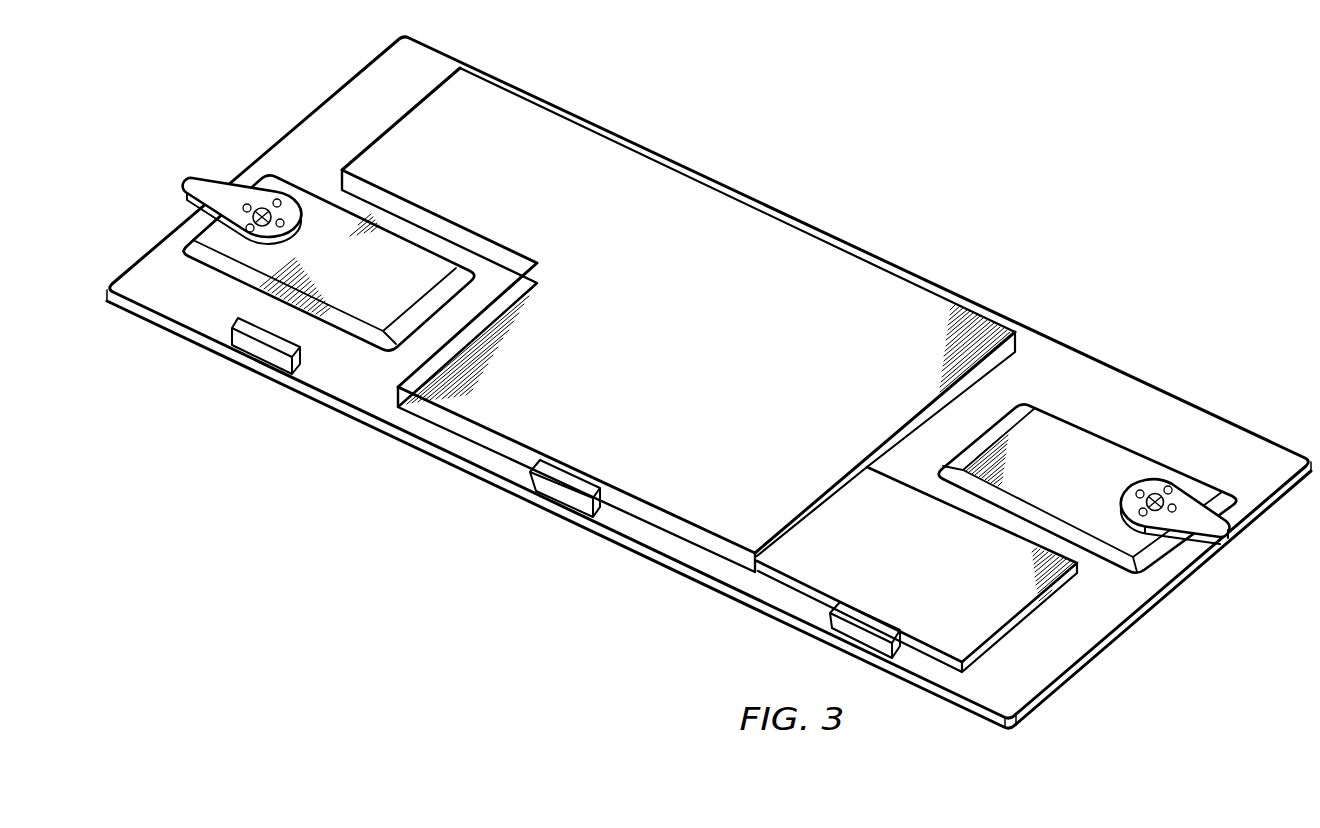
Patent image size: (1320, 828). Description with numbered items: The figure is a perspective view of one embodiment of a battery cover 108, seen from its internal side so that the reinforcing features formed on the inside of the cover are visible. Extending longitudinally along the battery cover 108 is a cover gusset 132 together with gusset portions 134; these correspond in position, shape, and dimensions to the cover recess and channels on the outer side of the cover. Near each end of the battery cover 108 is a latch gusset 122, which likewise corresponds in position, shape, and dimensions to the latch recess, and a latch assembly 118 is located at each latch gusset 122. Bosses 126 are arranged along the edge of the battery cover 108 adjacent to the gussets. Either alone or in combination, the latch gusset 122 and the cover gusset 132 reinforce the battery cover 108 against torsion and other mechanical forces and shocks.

The battery cover 108 is at (761, 110).
The latch assemblies 118 is at (202, 168).
The latch gusset 122 is at (420, 262).
The bosses 126 is at (217, 319).
The cover gusset 132 is at (787, 262).
The gusset portions 134 is at (507, 130).